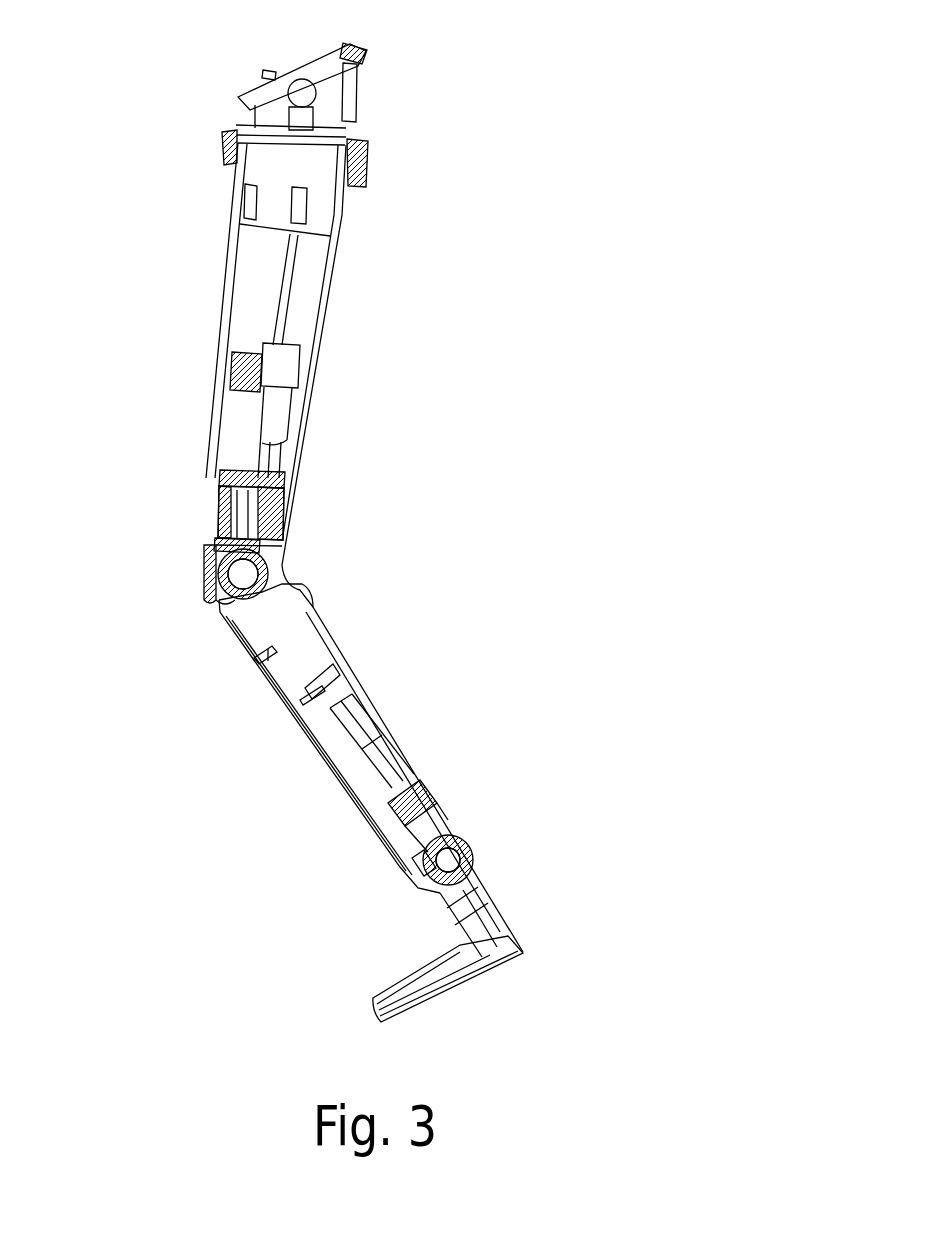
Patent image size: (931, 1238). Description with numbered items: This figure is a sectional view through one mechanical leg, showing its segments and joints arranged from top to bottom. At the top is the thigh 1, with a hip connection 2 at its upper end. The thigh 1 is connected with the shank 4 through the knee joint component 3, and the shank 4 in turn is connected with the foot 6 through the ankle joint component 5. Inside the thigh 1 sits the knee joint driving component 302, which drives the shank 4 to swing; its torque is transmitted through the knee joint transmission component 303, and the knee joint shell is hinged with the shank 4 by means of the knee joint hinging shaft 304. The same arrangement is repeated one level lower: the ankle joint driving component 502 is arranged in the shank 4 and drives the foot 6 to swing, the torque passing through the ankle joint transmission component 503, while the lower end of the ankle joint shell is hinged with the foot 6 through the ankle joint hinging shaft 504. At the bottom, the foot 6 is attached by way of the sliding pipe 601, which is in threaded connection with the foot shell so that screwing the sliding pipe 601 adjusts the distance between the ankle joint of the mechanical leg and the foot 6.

The thigh 1 is at (223, 330).
The hip joint 2 is at (322, 87).
The knee joint component 3 is at (227, 547).
The knee joint driving component 302 is at (277, 432).
The knee joint transmission component 303 is at (238, 512).
The knee joint hinging shaft 304 is at (243, 576).
The shank 4 is at (335, 640).
The ankle joint component 5 is at (443, 840).
The ankle joint driving component 502 is at (407, 755).
The ankle joint transmission component 503 is at (435, 810).
The ankle joint hinging shaft 504 is at (433, 867).
The foot 6 is at (440, 992).
The sliding pipe 601 is at (488, 942).